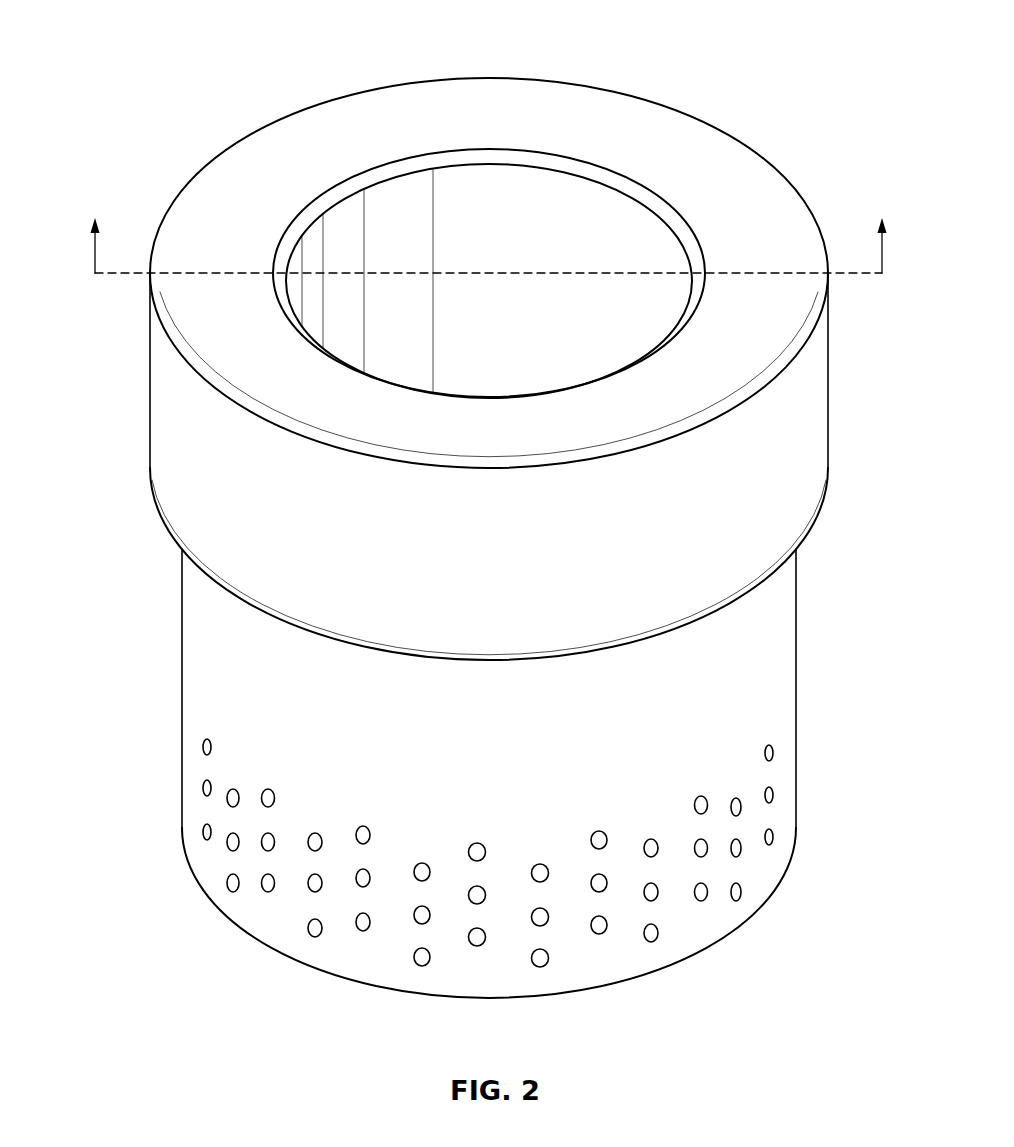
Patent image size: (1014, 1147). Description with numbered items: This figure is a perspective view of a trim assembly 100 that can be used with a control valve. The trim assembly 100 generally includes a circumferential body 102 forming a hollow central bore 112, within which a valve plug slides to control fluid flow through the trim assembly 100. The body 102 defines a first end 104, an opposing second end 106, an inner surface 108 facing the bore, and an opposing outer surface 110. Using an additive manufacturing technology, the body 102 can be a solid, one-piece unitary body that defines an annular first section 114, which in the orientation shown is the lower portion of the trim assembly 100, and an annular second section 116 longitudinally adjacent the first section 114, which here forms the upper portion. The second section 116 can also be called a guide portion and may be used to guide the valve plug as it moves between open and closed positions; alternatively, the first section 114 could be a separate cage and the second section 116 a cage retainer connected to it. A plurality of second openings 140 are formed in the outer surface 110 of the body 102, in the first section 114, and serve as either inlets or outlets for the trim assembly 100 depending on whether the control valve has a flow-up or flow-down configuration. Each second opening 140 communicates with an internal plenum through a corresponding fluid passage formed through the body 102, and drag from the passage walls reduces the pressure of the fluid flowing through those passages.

The trim assembly 100 is at (132, 45).
The circumferential body 102 is at (637, 112).
The first end 104 is at (409, 87).
The second end 106 is at (432, 999).
The inner surface 108 is at (653, 247).
The outer surface 110 is at (776, 677).
The hollow central bore 112 is at (512, 245).
The annular first section 114 is at (798, 795).
The annular second section 116 is at (798, 548).
The second openings 140 is at (363, 826).